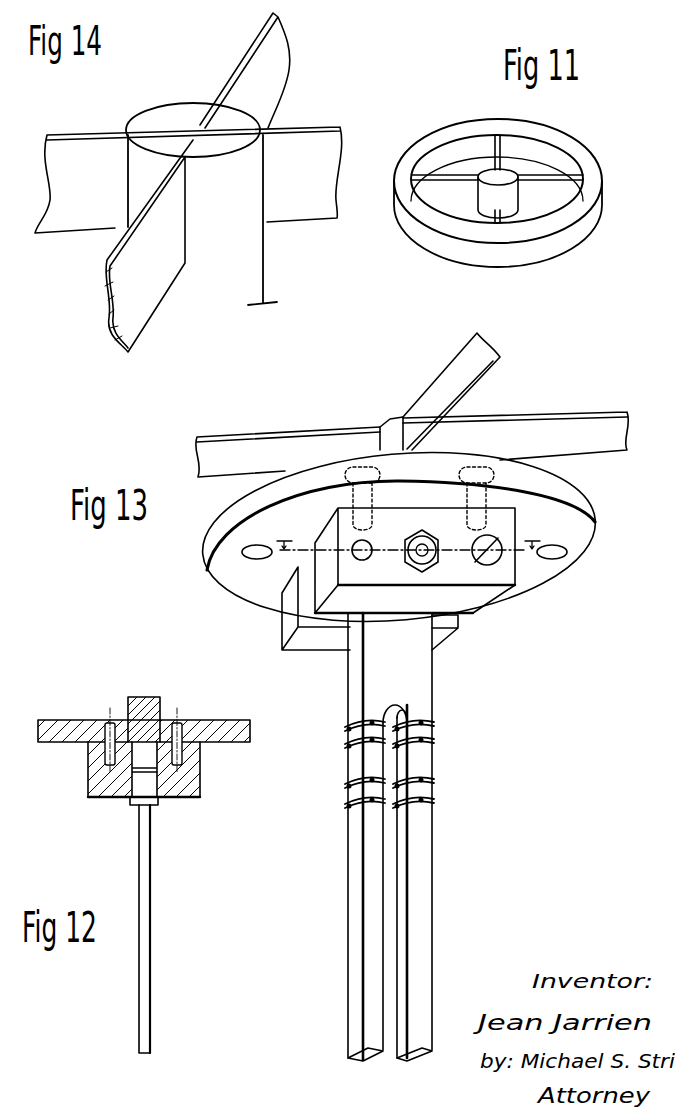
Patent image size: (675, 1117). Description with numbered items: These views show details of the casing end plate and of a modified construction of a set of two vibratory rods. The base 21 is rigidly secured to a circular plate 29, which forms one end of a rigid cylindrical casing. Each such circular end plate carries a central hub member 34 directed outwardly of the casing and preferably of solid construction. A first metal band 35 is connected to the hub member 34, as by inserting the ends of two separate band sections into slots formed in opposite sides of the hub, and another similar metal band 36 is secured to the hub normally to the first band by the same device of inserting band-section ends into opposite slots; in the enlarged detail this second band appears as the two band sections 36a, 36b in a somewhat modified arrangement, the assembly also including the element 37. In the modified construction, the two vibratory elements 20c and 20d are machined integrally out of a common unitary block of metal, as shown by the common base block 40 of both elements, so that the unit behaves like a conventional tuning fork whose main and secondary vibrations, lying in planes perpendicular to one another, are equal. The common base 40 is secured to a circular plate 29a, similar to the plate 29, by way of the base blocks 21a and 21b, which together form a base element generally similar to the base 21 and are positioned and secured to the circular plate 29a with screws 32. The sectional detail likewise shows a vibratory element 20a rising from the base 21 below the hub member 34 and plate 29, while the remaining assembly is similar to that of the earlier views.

In FIG. 14, the central hub member 34 is at (173, 118).
In FIG. 11, the central hub member 34 is at (505, 177).
In FIG. 12, the central hub member 34 is at (149, 703).
In FIG. 14, the first metal band 35 is at (297, 207).
In FIG. 11, the first metal band 35 is at (558, 192).
In FIG. 13, the first metal band 35 is at (272, 440).
In FIG. 11, the second metal band 36 is at (495, 193).
In FIG. 13, the second metal band 36 is at (460, 368).
In FIG. 14, the band section 36a is at (127, 297).
In FIG. 14, the band section 36b is at (280, 62).
In FIG. 11, the ring 37 is at (547, 250).
In FIG. 12, the circular plate 29 is at (215, 723).
In FIG. 13, the circular plate 29a is at (218, 525).
In FIG. 13, the screws 32 is at (482, 497).
In FIG. 12, the screws 32 is at (109, 724).
In FIG. 12, the base 21 is at (192, 779).
In FIG. 13, the base block 21a is at (290, 590).
In FIG. 13, the base block 21b is at (333, 530).
In FIG. 13, the common base block 40 is at (410, 687).
In FIG. 12, the leg 20a is at (149, 847).
In FIG. 13, the vibratory element 20c is at (353, 853).
In FIG. 13, the vibratory element 20d is at (420, 848).